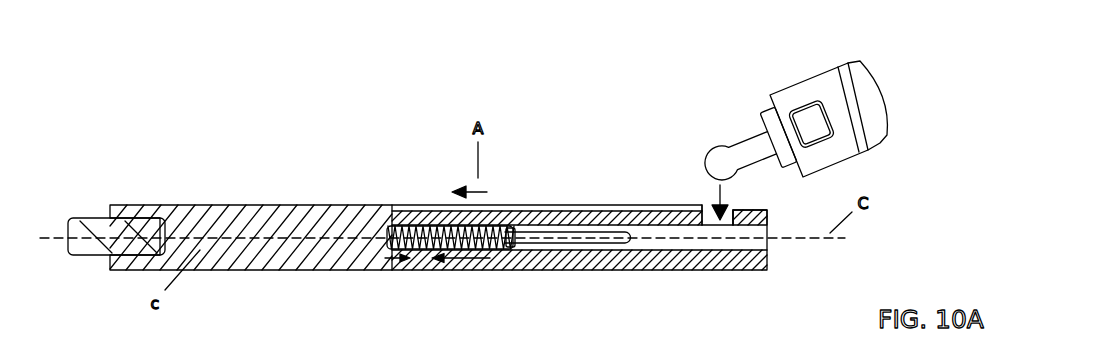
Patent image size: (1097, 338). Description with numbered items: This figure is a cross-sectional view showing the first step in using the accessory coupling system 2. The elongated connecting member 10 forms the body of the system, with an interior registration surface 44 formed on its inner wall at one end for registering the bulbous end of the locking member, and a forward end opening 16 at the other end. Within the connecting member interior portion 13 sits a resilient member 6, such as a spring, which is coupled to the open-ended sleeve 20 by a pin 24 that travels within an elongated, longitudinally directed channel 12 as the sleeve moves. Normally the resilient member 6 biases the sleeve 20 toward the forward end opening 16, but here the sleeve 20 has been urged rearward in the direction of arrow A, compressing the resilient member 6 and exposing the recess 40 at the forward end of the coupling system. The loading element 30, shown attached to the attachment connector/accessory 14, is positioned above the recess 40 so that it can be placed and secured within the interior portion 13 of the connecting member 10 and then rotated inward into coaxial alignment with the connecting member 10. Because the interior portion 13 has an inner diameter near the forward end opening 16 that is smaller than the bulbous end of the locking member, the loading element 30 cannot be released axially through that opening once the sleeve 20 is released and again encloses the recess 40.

The coupling system 2 is at (265, 185).
The resilient member 6 is at (421, 226).
The elongated connecting member 10 is at (318, 278).
The channel 12 is at (632, 237).
The interior portion 13 is at (718, 252).
The attachment connector/accessory 14 is at (813, 78).
The forward end opening 16 is at (768, 233).
The sleeve 20 is at (575, 205).
The pin 24 is at (514, 239).
The loading element 30 is at (748, 110).
The recess 40 is at (700, 205).
The interior registration surface 44 is at (86, 218).